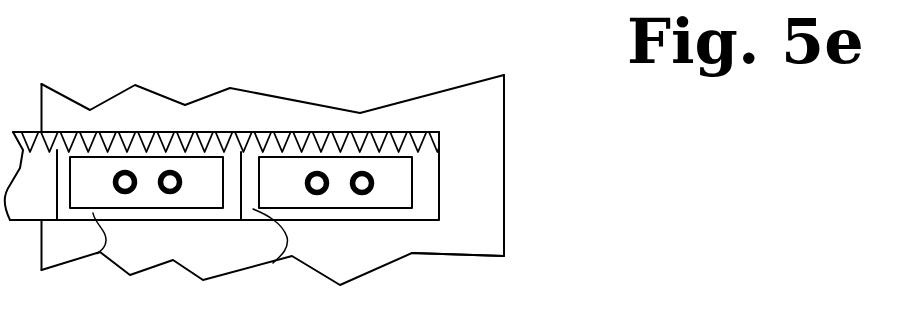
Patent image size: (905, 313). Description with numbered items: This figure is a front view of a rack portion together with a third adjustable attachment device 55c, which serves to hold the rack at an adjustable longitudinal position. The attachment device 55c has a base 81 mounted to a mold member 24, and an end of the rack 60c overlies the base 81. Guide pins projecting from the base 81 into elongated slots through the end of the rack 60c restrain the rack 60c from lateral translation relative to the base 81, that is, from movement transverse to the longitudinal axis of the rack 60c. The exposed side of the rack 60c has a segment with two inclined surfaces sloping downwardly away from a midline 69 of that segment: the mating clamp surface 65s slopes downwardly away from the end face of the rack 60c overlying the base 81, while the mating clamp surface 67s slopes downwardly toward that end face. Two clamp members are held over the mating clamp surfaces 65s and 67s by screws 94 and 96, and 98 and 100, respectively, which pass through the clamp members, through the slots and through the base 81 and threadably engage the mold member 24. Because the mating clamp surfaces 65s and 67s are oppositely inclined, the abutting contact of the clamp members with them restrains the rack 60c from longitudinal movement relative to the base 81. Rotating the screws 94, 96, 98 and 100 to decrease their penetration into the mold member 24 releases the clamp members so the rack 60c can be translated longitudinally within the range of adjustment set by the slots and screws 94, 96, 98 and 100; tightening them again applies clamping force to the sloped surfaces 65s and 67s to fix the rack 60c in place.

The third adjustable attachment device 55c is at (440, 78).
The mold member 24 is at (458, 165).
The rack 60c is at (31, 176).
The base 81 is at (416, 146).
The midline 69 is at (242, 180).
The mating clamp surface 65s is at (100, 252).
The mating clamp surface 67s is at (273, 263).
The screw 94 is at (127, 188).
The screw 96 is at (172, 188).
The screw 98 is at (318, 190).
The screw 100 is at (363, 190).